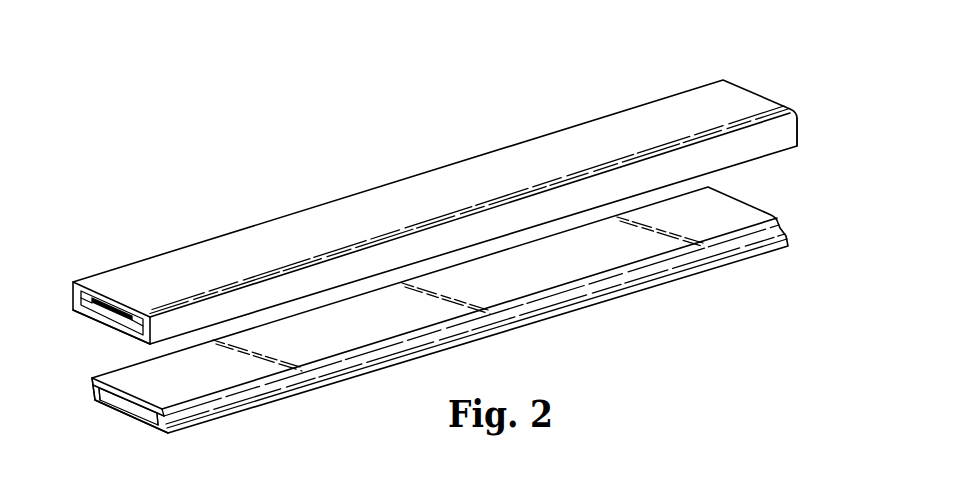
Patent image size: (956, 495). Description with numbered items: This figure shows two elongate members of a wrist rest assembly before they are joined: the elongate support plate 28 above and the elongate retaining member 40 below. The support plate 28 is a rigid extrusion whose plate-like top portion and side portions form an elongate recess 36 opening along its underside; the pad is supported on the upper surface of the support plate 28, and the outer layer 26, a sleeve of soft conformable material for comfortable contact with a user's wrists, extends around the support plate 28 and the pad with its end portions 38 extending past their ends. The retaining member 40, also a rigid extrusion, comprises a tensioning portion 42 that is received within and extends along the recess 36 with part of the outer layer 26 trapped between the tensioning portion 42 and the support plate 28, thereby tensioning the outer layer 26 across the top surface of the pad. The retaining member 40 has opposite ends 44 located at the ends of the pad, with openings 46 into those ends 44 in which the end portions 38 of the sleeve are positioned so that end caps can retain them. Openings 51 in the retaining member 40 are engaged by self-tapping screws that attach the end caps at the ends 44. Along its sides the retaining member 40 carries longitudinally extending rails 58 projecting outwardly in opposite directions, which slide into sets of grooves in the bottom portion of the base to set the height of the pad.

The outer layer 26 is at (428, 205).
The end portions 38 is at (742, 96).
The elongate recess 36 is at (100, 305).
The elongate support plate 28 is at (116, 316).
The tensioning portion 42 is at (421, 334).
The elongate retaining member 40 is at (582, 317).
The opposite ends 44 is at (727, 212).
The openings 46 is at (112, 404).
The openings 51 is at (96, 394).
The rails 58 is at (90, 393).